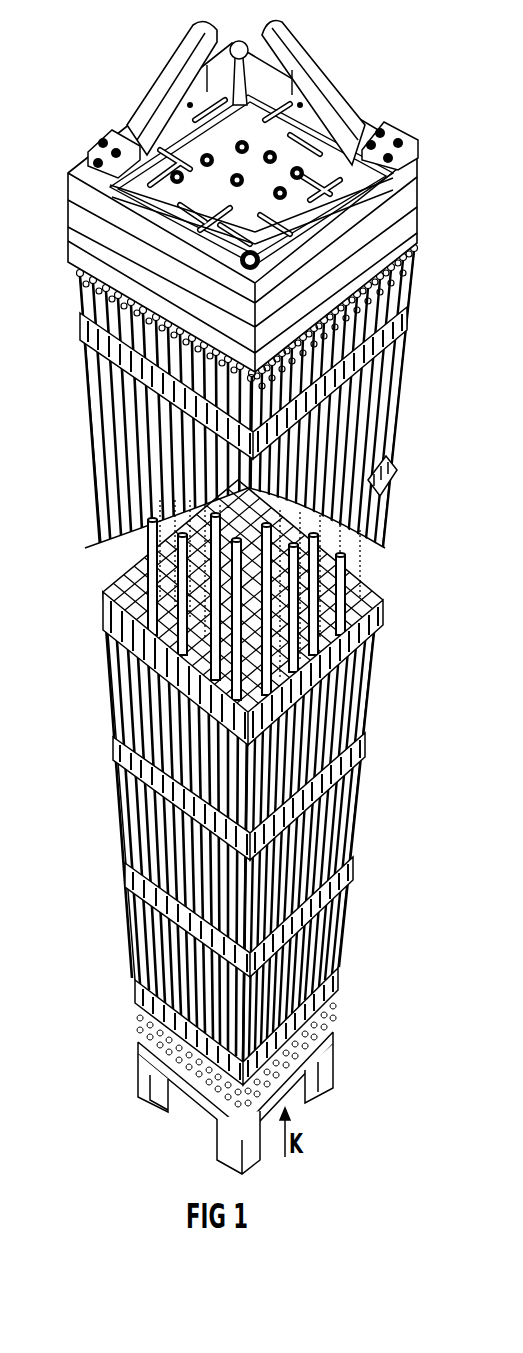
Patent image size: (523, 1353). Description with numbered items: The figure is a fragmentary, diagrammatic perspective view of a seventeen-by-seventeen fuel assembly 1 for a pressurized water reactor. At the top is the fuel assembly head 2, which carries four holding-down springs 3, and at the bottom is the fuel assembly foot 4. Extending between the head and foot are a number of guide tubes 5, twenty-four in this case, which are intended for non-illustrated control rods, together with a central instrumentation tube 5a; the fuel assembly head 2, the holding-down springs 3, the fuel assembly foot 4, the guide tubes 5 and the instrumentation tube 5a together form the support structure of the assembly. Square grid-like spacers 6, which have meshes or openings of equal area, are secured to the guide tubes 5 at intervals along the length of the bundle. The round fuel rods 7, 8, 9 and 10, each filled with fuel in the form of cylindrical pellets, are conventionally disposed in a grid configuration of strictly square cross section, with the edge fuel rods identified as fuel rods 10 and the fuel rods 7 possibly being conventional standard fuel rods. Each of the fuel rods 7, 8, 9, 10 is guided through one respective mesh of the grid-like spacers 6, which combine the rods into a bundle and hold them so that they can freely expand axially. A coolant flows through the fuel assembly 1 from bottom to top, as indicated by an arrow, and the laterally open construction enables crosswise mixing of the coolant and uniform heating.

The fuel assembly 1 is at (419, 536).
The fuel assembly head 2 is at (405, 200).
The holding-down springs 3 is at (332, 95).
The fuel assembly foot 4 is at (330, 1052).
The guide tubes 5 is at (342, 560).
The instrumentation tube 5a is at (212, 520).
The grid-like spacers 6 is at (402, 305).
The fuel rods 7 is at (85, 267).
The fuel rods 8 is at (400, 284).
The fuel rods 9 is at (285, 686).
The edge fuel rods 10 is at (412, 248).